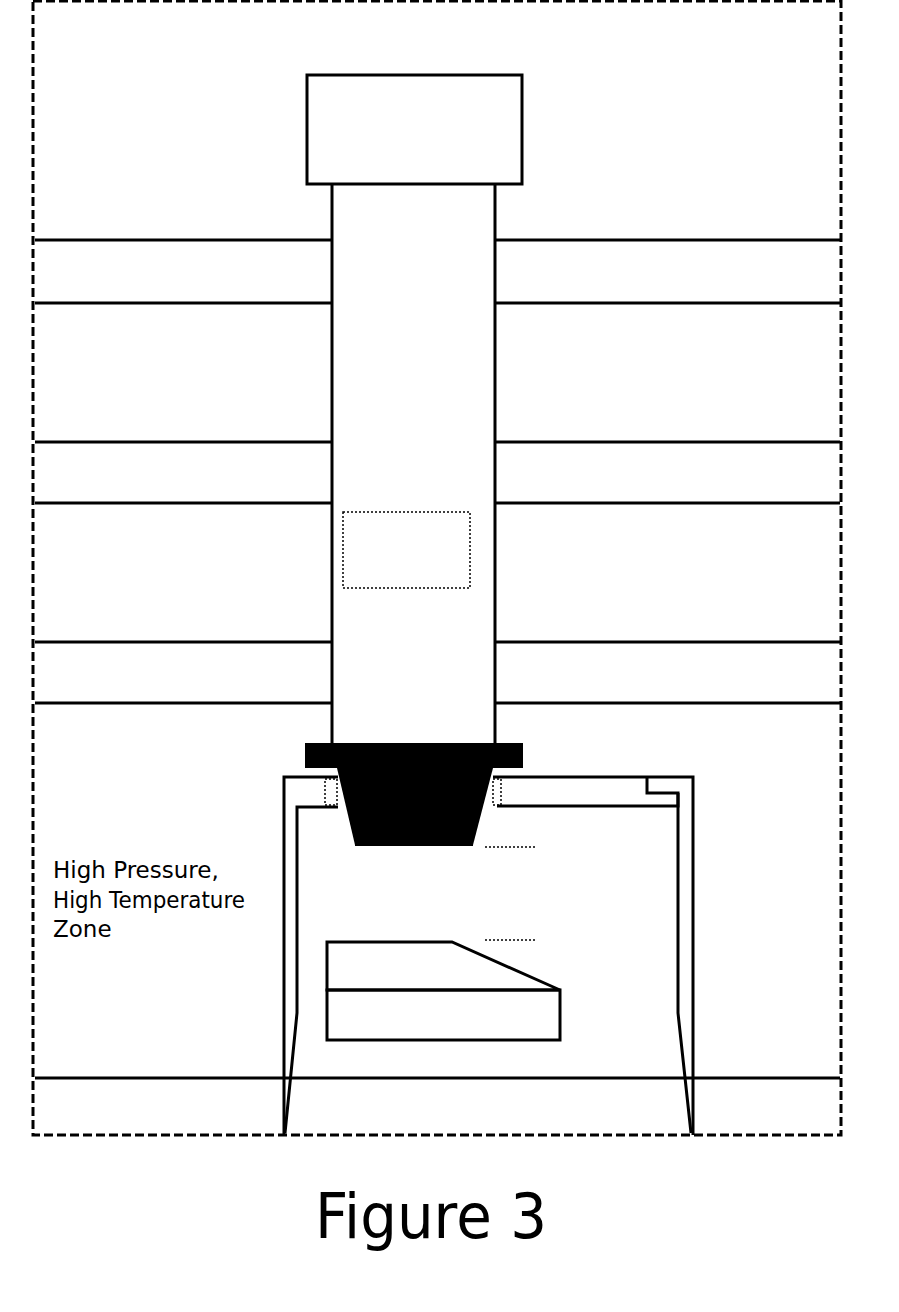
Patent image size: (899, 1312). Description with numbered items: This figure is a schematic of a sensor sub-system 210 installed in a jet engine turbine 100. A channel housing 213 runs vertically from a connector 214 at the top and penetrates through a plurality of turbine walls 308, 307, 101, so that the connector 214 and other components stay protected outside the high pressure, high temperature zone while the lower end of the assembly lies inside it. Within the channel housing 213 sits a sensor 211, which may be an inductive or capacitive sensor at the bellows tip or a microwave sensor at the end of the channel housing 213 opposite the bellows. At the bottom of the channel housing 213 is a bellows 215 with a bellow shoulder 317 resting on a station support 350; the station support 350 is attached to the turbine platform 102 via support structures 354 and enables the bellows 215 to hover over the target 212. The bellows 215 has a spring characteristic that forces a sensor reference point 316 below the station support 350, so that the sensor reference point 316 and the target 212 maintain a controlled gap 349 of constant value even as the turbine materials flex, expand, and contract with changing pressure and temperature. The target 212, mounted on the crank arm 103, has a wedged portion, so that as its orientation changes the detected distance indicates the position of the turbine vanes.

The jet engine turbine 100 is at (168, 54).
The turbine case wall 101 is at (437, 672).
The turbine platform 102 is at (437, 1098).
The crank arm 103 is at (443, 1015).
The sensor sub-system 210 is at (545, 94).
The sensor 211 is at (406, 550).
The target 212 is at (443, 966).
The channel housing 213 is at (413, 463).
The connector 214 is at (414, 129).
The bellows 215 is at (437, 807).
The turbine wall 307 is at (437, 472).
The turbine wall 308 is at (437, 271).
The sensor reference point 316 is at (363, 857).
The bellow shoulder 317 is at (292, 757).
The controlled gap 349 is at (530, 923).
The station support 350 is at (462, 933).
The support structure 354 is at (282, 1012).